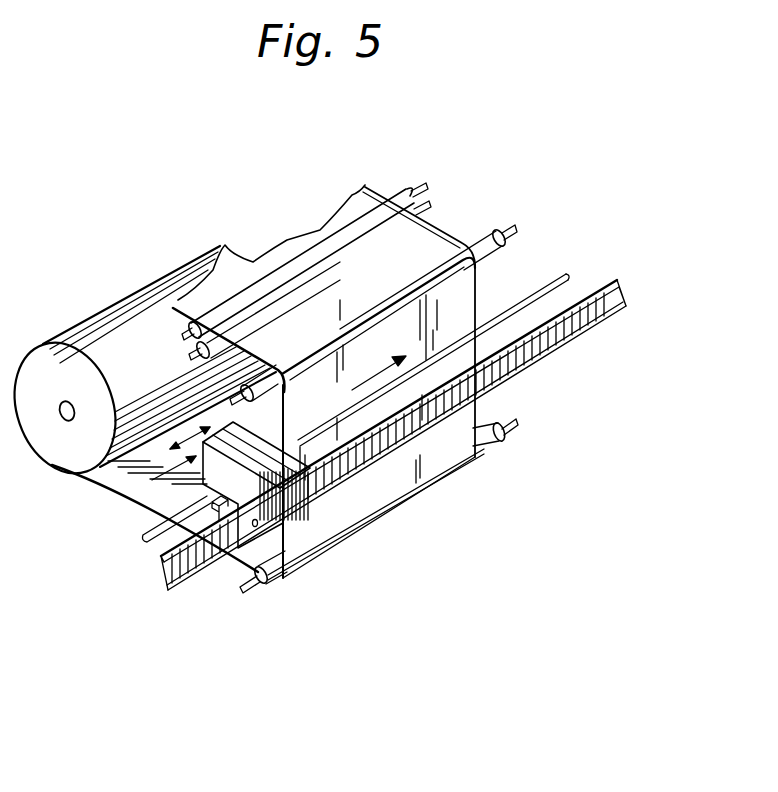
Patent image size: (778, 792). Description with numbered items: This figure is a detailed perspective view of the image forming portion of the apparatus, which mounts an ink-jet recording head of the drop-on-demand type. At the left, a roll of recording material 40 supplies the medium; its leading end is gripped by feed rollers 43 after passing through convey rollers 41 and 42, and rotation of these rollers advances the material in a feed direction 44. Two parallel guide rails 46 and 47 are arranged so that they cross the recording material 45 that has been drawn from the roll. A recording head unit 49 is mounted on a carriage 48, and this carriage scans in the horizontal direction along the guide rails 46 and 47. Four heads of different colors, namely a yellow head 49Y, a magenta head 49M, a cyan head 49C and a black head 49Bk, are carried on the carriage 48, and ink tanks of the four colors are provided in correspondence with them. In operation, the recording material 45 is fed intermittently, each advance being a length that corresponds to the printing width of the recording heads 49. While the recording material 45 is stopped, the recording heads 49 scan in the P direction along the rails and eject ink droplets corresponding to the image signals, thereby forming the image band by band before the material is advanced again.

The roll of recording material 40 is at (143, 300).
The convey roller 41 is at (500, 440).
The convey roller 42 is at (491, 236).
The feed rollers 43 is at (407, 192).
The feed direction 44 is at (236, 217).
The recording material 45 is at (432, 468).
The guide rail 46 is at (560, 276).
The guide rail 47 is at (553, 343).
The carriage 48 is at (160, 493).
The recording head unit 49 is at (143, 482).
The black head 49Bk is at (290, 526).
The cyan head 49C is at (296, 523).
The magenta head 49M is at (300, 522).
The yellow head 49Y is at (305, 520).